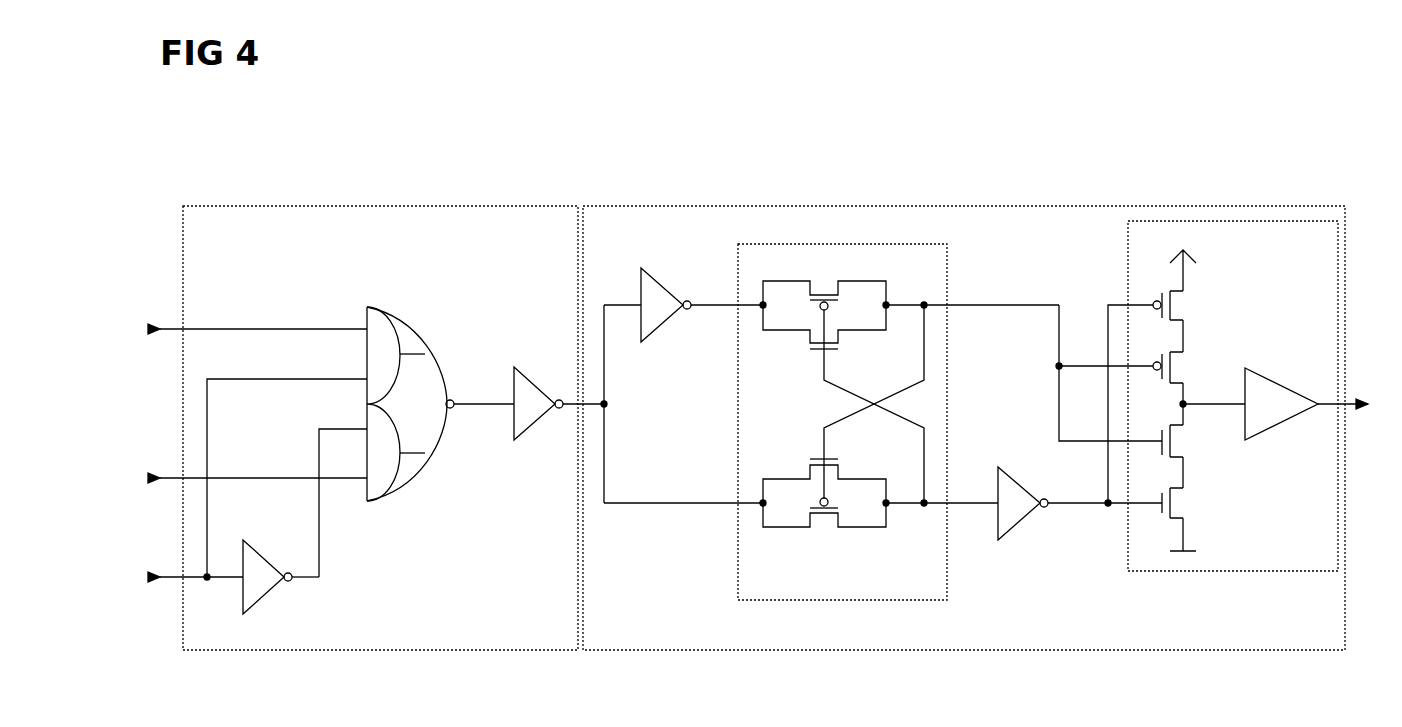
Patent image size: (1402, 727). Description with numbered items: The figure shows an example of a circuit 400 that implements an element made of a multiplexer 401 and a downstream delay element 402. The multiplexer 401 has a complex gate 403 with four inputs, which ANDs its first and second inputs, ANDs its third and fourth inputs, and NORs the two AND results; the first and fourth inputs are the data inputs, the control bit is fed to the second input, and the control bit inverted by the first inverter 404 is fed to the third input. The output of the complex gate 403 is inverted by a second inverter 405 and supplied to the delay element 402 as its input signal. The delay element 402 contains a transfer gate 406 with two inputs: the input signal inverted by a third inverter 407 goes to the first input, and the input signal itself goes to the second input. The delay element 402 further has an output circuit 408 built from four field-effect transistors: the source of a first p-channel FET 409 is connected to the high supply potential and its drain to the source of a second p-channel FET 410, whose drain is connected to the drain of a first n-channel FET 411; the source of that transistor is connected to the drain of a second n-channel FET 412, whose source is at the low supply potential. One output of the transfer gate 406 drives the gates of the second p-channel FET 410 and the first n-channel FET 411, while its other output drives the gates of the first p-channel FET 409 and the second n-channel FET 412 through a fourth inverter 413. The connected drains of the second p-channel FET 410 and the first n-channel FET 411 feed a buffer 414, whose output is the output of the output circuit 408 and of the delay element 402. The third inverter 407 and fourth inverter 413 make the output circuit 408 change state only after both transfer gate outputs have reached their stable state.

The circuit 400 is at (1265, 83).
The multiplexer 401 is at (497, 203).
The delay element 402 is at (1047, 205).
The complex gate 403 is at (400, 331).
The first inverter 404 is at (255, 545).
The second inverter 405 is at (522, 373).
The transfer gate 406 is at (920, 230).
The third inverter 407 is at (697, 266).
The output circuit 408 is at (1218, 222).
The first p-channel FET 409 is at (1190, 292).
The second p-channel FET 410 is at (1190, 352).
The first n-channel FET 411 is at (1195, 460).
The second n-channel FET 412 is at (1195, 525).
The fourth inverter 413 is at (1010, 463).
The buffer 414 is at (1265, 374).